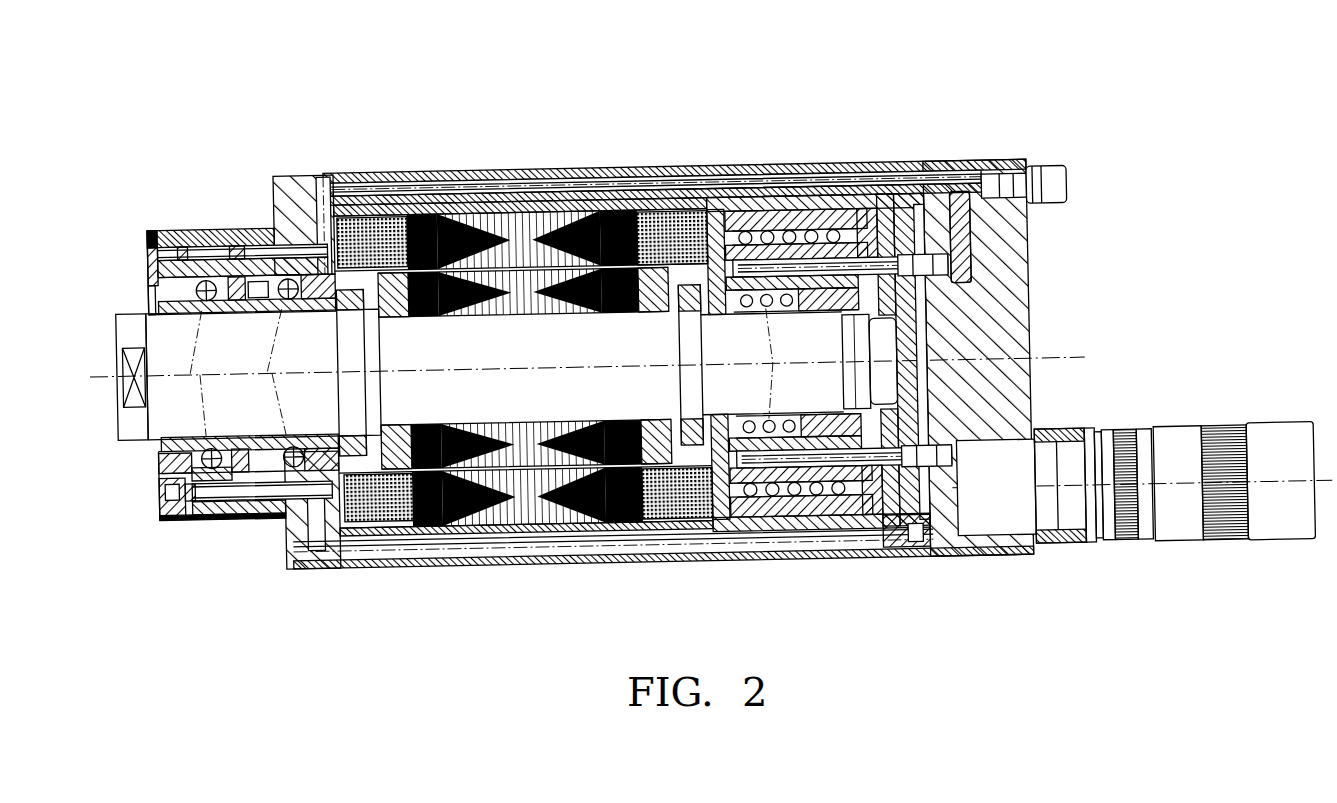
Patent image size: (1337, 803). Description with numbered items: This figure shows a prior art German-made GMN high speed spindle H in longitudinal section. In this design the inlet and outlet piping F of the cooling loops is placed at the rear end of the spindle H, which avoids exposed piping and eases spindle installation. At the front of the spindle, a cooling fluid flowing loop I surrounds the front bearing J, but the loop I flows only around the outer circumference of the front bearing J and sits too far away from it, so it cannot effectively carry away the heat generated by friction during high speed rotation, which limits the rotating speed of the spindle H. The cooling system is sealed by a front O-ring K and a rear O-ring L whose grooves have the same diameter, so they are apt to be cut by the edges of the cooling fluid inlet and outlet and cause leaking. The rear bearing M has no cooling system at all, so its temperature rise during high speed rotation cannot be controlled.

The GMN high speed spindle H is at (611, 160).
The front O-ring K is at (367, 213).
The rear O-ring L is at (694, 212).
The rear bearing M is at (765, 253).
The inlet and outlet piping F is at (1047, 200).
The cooling fluid flowing loop I is at (206, 235).
The front bearing J is at (153, 279).